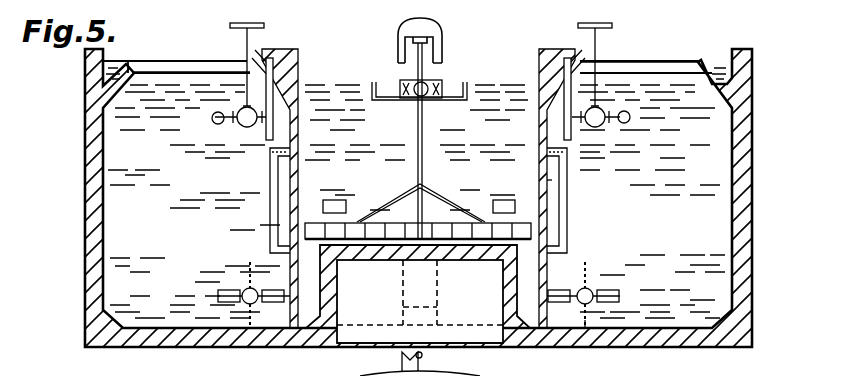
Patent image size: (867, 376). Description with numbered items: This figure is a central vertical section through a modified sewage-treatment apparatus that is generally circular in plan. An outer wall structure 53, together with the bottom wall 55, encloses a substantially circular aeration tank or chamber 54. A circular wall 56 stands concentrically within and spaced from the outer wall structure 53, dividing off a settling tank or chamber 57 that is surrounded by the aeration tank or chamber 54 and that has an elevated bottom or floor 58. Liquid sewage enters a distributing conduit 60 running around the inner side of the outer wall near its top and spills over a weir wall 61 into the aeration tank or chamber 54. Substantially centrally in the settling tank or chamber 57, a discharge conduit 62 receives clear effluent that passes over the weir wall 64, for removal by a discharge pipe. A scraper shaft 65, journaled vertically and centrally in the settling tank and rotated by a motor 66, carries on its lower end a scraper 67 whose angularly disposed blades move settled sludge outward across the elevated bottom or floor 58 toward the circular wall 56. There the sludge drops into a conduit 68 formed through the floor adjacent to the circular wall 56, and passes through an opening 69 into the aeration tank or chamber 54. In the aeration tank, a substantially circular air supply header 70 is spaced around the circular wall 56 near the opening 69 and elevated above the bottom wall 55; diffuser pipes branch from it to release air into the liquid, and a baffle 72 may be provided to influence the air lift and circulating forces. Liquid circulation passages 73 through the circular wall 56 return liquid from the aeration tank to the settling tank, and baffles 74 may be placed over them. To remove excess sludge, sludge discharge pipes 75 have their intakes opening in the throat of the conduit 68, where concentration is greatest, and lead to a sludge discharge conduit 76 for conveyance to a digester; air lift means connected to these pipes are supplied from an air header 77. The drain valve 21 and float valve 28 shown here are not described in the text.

The drain valve 21 is at (617, 300).
The float valve 28 is at (593, 127).
The outer wall structure 53 is at (754, 262).
The aeration tank or chamber 54 is at (740, 182).
The bottom wall 55 is at (700, 338).
The circular wall 56 is at (287, 53).
The settling tank or chamber 57 is at (483, 75).
The elevated bottom or floor 58 is at (455, 252).
The distributing conduit 60 is at (736, 71).
The weir wall 61 is at (702, 66).
The discharge conduit 62 is at (447, 88).
The weir wall 64 is at (372, 84).
The scraper shaft 65 is at (423, 140).
The motor 66 is at (441, 32).
The scraper 67 is at (385, 225).
The conduit 68 is at (518, 330).
The opening 69 is at (540, 326).
The air supply header 70 is at (589, 288).
The baffle 72 is at (600, 330).
The liquid circulation passage 73 is at (292, 200).
The baffle 74 is at (566, 185).
The sludge discharge pipe 75 is at (568, 226).
The sludge discharge conduit 76 is at (568, 62).
The air header 77 is at (630, 118).